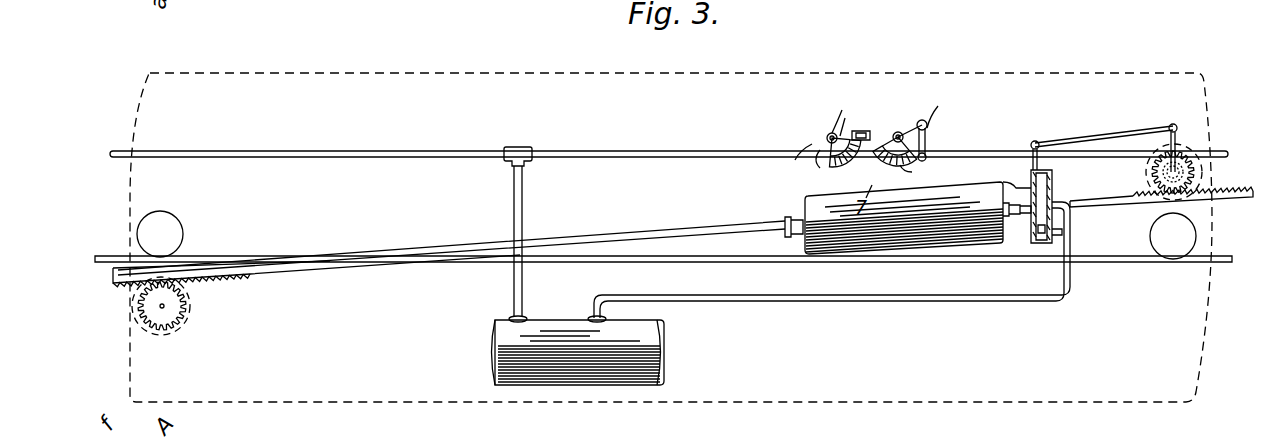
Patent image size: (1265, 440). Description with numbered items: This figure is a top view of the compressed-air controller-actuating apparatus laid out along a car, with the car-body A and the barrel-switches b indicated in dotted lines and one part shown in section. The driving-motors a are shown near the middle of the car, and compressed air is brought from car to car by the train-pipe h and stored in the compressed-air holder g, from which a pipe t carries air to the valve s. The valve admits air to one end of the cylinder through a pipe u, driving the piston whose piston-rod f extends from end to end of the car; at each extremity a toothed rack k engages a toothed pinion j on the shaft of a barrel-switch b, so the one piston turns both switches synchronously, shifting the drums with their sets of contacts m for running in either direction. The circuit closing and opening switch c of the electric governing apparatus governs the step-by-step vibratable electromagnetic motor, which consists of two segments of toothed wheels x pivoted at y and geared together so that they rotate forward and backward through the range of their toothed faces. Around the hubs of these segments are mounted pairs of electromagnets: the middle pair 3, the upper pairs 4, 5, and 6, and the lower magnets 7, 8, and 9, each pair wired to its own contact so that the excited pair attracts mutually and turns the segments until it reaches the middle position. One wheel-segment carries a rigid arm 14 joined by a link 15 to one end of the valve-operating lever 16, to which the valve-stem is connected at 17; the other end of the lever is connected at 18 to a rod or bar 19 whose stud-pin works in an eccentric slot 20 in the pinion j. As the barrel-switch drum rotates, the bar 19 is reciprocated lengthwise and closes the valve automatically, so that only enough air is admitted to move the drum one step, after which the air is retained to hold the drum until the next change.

The car-body A is at (562, 76).
The train-pipe h is at (362, 159).
The circuit closing and opening switch c is at (176, 231).
The toothed rack k is at (113, 283).
The toothed pinion j is at (148, 317).
The barrel-switches b is at (190, 320).
The piston-rod f is at (592, 244).
The driving-motors a is at (805, 206).
The valve s is at (1049, 206).
The contacts m is at (1064, 232).
The pipe t is at (1036, 306).
The compressed-air holder g is at (664, 352).
The middle pair of magnets 3 is at (880, 160).
The upper pair of magnets 4 is at (832, 109).
The upper pair of magnets 5 is at (848, 115).
The upper pair of magnets 6 is at (862, 124).
The lower magnets 7 is at (840, 164).
The lower magnets 8 is at (826, 168).
The lower magnets 9 is at (822, 163).
The pipe u is at (900, 172).
The segments of toothed wheels x is at (830, 134).
The pivot y is at (864, 124).
The rigid arm 14 is at (928, 128).
The link 15 is at (926, 145).
The valve-operating lever 16 is at (1104, 129).
The valve-stem connection 17 is at (1035, 141).
The lever connection 18 is at (1173, 124).
The rod or bar 19 is at (1180, 140).
The eccentric slot 20 is at (1166, 160).